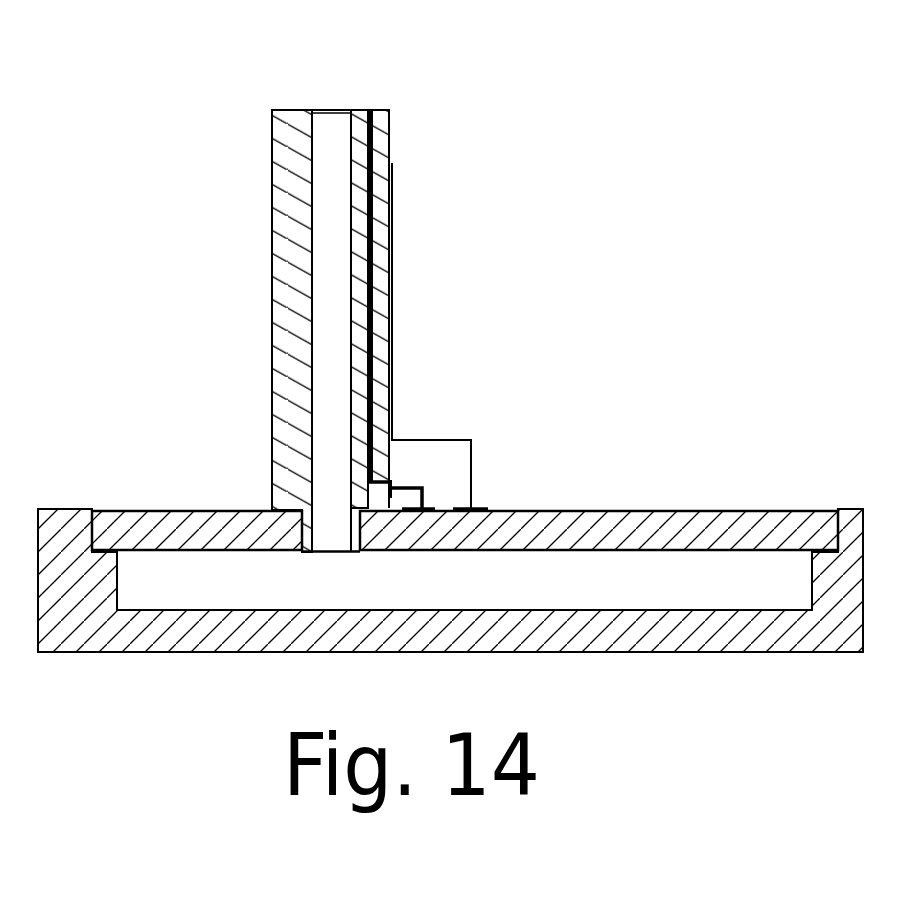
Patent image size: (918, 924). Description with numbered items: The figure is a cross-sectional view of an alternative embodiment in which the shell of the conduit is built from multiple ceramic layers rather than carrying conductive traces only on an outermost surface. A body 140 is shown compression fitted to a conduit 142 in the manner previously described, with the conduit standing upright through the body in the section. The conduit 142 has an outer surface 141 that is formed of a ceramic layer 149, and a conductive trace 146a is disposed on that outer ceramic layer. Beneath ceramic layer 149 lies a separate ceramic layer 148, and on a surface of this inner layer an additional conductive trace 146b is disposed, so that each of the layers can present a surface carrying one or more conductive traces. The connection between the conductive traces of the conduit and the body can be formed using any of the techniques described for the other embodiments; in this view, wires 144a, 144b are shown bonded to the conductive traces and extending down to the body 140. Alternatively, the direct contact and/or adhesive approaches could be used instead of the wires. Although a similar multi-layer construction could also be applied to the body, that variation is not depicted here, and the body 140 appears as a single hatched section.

The body 140 is at (174, 690).
The outer surface 141 is at (272, 225).
The conduit 142 is at (335, 289).
The wire 144a is at (455, 439).
The wire 144b is at (426, 497).
The conductive trace 146a is at (393, 325).
The conductive trace 146b is at (392, 292).
The ceramic layer 148 is at (361, 108).
The ceramic layer 149 is at (379, 108).